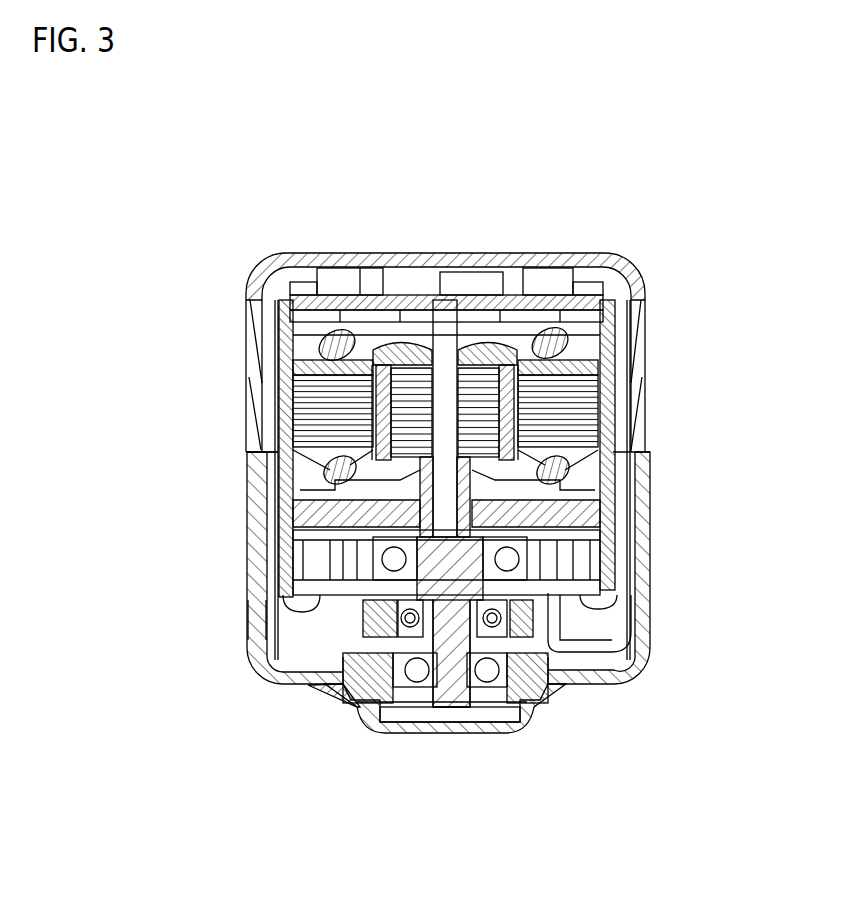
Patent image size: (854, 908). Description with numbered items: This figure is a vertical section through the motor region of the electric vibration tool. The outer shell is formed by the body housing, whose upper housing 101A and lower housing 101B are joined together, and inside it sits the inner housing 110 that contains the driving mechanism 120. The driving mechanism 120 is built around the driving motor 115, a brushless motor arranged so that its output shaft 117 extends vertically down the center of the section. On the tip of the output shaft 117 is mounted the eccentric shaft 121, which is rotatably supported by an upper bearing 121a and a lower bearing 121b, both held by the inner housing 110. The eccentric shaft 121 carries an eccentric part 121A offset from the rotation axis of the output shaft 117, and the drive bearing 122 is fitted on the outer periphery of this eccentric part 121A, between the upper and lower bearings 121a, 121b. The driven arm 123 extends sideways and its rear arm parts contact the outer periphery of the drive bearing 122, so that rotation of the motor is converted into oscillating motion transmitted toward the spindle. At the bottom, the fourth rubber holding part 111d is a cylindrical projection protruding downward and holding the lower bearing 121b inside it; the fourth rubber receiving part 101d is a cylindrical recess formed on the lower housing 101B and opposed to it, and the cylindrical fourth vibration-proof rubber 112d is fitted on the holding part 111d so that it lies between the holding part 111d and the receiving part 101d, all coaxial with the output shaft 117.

The inner housing 110 is at (449, 292).
The upper housing 101A is at (253, 330).
The lower housing 101B is at (257, 605).
The driving motor 115 is at (622, 407).
The output shaft 117 is at (608, 518).
The upper bearing 121a is at (515, 557).
The driven arm 123 is at (568, 652).
The driving mechanism 120 is at (588, 662).
The fourth rubber receiving part 101d is at (353, 687).
The fourth vibration-proof rubber 112d is at (343, 703).
The fourth rubber holding part 111d is at (397, 700).
The eccentric shaft 121 is at (455, 695).
The eccentric part 121A is at (450, 620).
The lower bearing 121b is at (490, 673).
The drive bearing 122 is at (540, 667).